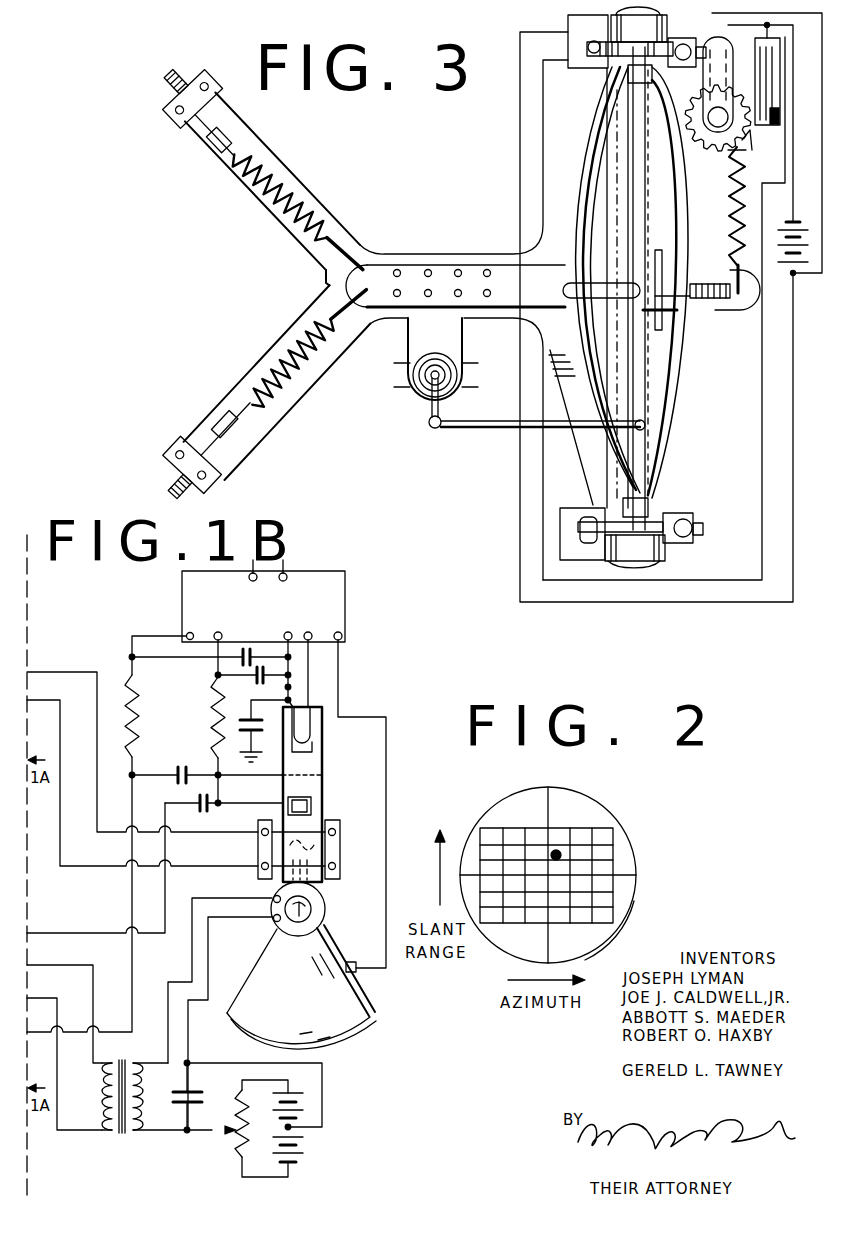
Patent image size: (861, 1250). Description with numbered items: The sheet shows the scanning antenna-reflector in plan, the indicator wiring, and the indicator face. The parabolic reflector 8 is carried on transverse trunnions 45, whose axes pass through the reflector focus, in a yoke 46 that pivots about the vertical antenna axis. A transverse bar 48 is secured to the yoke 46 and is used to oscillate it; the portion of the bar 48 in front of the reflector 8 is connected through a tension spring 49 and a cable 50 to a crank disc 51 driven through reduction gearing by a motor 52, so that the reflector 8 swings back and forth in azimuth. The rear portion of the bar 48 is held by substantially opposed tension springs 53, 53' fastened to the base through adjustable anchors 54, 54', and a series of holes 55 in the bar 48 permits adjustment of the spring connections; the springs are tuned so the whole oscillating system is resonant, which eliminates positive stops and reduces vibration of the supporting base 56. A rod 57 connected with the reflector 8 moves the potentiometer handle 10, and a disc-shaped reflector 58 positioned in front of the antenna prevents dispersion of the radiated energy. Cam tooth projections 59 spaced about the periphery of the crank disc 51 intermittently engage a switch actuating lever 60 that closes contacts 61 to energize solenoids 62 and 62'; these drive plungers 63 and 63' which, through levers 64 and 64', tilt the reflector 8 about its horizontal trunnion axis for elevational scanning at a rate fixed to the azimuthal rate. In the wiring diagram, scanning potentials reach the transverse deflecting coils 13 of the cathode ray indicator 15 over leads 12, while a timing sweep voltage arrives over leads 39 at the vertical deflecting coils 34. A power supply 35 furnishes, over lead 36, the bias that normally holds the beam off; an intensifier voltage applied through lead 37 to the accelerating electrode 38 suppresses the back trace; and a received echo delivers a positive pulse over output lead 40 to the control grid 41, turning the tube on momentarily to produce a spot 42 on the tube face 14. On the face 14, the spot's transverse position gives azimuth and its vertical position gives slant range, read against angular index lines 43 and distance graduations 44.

In FIG. 3, the parabolic reflector 8 is at (648, 365).
In FIG. 3, the potentiometer handle 10 is at (430, 407).
In FIG. 1B, the leads 12 is at (78, 676).
In FIG. 1B, the transverse deflecting coils 13 is at (258, 851).
In FIG. 1B, the cathode ray tube face 14 is at (357, 1030).
In FIG. 2, the cathode ray tube face 14 is at (593, 813).
In FIG. 1B, the indicator 15 is at (323, 787).
In FIG. 1B, the vertical deflecting coils 34 is at (325, 910).
In FIG. 1B, the power supply 35 is at (322, 600).
In FIG. 1B, the lead 36 is at (217, 760).
In FIG. 1B, the lead 37 is at (82, 928).
In FIG. 1B, the accelerating electrode 38 is at (320, 801).
In FIG. 1B, the leads 39 is at (65, 968).
In FIG. 1B, the output lead 40 is at (127, 990).
In FIG. 1B, the control grid 41 is at (302, 772).
In FIG. 2, the spot 42 is at (558, 849).
In FIG. 2, the angular index lines 43 is at (606, 922).
In FIG. 2, the distance graduations 44 is at (598, 873).
In FIG. 3, the trunnions 45 is at (633, 567).
In FIG. 3, the yoke 46 is at (603, 487).
In FIG. 3, the transverse bar 48 is at (713, 310).
In FIG. 3, the tension spring 49 is at (730, 213).
In FIG. 3, the cable 50 is at (742, 157).
In FIG. 3, the crank disc 51 is at (707, 147).
In FIG. 3, the motor 52 is at (712, 38).
In FIG. 3, the tension spring 53 is at (279, 191).
In FIG. 3, the tension spring 53' is at (285, 374).
In FIG. 3, the adjustable anchor 54 is at (202, 472).
In FIG. 3, the adjustable anchor 54' is at (198, 91).
In FIG. 3, the holes 55 is at (458, 269).
In FIG. 3, the supporting base 56 is at (567, 150).
In FIG. 3, the rod 57 is at (452, 432).
In FIG. 3, the disc-shaped reflector 58 is at (663, 253).
In FIG. 3, the cam tooth projections 59 is at (750, 132).
In FIG. 3, the switch actuating lever 60 is at (772, 93).
In FIG. 3, the contacts 61 is at (780, 118).
In FIG. 3, the solenoid 62 is at (566, 39).
In FIG. 3, the solenoid 62' is at (539, 534).
In FIG. 3, the plunger 63 is at (602, 44).
In FIG. 3, the plunger 63' is at (573, 526).
In FIG. 3, the lever 64 is at (643, 71).
In FIG. 3, the lever 64' is at (690, 545).